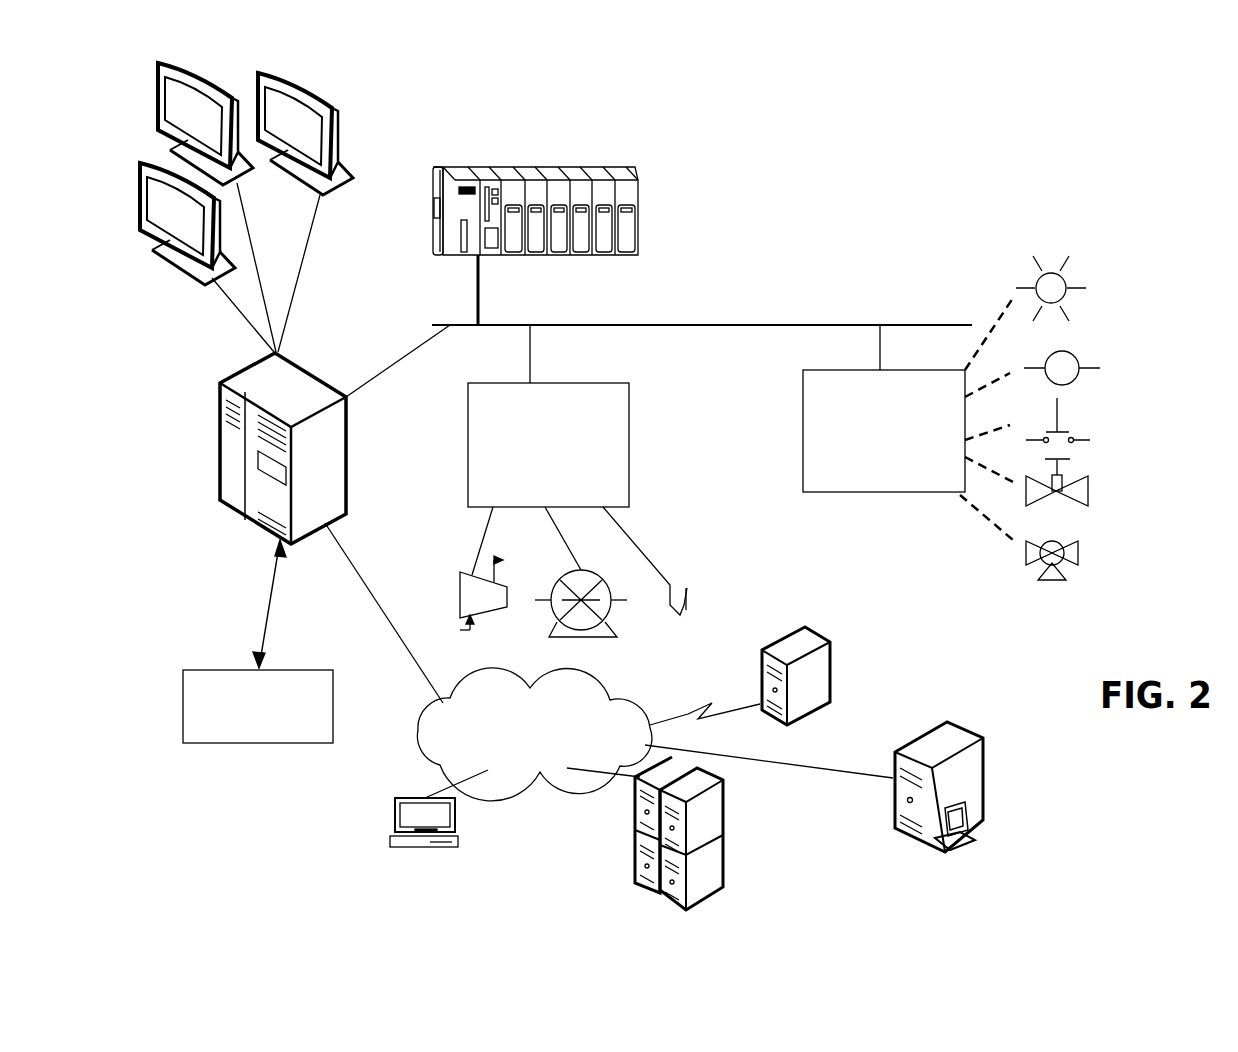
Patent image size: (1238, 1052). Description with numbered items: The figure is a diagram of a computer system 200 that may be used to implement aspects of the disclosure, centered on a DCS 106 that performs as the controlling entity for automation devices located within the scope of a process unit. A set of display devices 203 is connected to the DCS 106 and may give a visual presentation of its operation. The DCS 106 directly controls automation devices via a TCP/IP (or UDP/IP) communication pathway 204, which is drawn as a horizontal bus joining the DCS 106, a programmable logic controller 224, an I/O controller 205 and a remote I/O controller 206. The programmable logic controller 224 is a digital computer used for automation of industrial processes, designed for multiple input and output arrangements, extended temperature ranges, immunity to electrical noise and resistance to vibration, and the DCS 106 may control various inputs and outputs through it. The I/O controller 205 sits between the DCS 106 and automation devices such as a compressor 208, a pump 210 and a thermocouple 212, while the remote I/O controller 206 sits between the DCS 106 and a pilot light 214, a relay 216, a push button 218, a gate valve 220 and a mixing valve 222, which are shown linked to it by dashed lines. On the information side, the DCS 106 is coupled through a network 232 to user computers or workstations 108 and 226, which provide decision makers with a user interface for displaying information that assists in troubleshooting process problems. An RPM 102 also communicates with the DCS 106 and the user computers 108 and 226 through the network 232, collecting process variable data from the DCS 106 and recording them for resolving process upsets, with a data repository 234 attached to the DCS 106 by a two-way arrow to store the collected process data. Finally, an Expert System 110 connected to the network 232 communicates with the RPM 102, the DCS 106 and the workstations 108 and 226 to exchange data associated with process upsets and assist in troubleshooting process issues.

The computer system 200 is at (898, 151).
The display devices 203 is at (199, 70).
The programmable logic controller 224 is at (543, 165).
The TCP/IP communication pathway 204 is at (887, 322).
The DCS 106 is at (220, 430).
The I/O controller 205 is at (629, 445).
The remote I/O controller 206 is at (848, 495).
The compressor 208 is at (460, 592).
The pump 210 is at (612, 637).
The thermocouple 212 is at (684, 612).
The pilot light 214 is at (1068, 300).
The relay 216 is at (1078, 376).
The push button 218 is at (1080, 413).
The gate valve 220 is at (1090, 490).
The mixing valve 222 is at (1080, 550).
The data repository 234 is at (183, 712).
The network 232 is at (517, 753).
The user computer 226 is at (458, 818).
The user computer 108 is at (832, 660).
The RPM 102 is at (723, 830).
The Expert System 110 is at (983, 775).